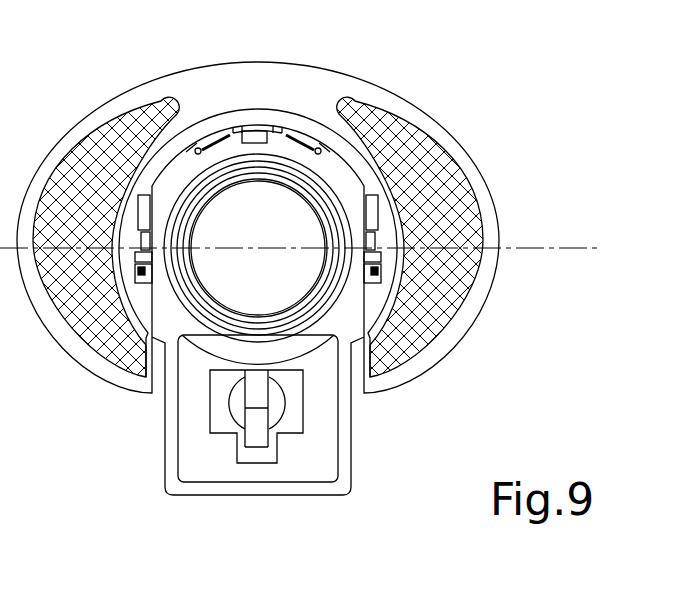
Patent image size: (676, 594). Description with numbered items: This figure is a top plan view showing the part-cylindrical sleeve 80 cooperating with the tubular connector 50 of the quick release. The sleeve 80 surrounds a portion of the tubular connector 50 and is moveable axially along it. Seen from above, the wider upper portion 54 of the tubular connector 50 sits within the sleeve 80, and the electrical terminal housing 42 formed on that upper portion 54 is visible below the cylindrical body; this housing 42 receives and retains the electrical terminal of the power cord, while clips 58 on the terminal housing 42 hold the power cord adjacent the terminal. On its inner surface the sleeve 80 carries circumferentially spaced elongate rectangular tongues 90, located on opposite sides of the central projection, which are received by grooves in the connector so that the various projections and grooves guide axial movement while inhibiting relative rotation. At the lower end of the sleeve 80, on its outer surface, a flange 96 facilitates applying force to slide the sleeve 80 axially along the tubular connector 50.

The part-cylindrical sleeve 80 is at (488, 135).
The flange 96 is at (442, 203).
The upper portion 54 is at (283, 148).
The elongate rectangular tongues 90 is at (237, 147).
The tubular connector 50 is at (150, 432).
The electrical terminal housing 42 is at (315, 450).
The clips 58 is at (240, 410).